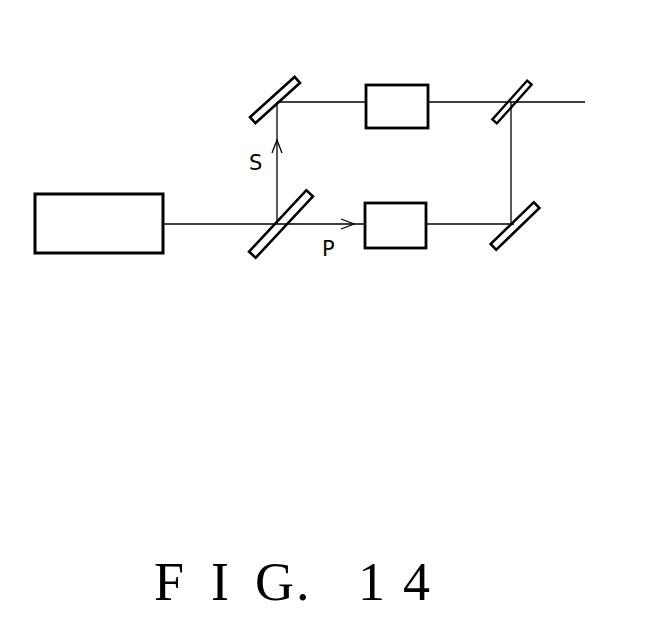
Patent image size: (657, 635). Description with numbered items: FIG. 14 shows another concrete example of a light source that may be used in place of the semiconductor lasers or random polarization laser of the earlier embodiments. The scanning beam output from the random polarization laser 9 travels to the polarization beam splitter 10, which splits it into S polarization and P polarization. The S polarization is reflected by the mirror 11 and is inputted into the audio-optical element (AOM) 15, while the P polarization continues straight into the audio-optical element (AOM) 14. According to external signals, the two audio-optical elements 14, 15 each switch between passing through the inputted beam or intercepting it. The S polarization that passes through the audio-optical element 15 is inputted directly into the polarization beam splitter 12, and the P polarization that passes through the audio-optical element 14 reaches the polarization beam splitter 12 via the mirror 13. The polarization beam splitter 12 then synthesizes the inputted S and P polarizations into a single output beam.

The random polarization laser 9 is at (102, 244).
The polarization beam splitter 10 is at (268, 245).
The mirror 11 is at (274, 80).
The polarization beam splitter 12 is at (512, 86).
The mirror 13 is at (530, 212).
The audio-optical element (AOM) 14 is at (400, 248).
The audio-optical element (AOM) 15 is at (390, 85).